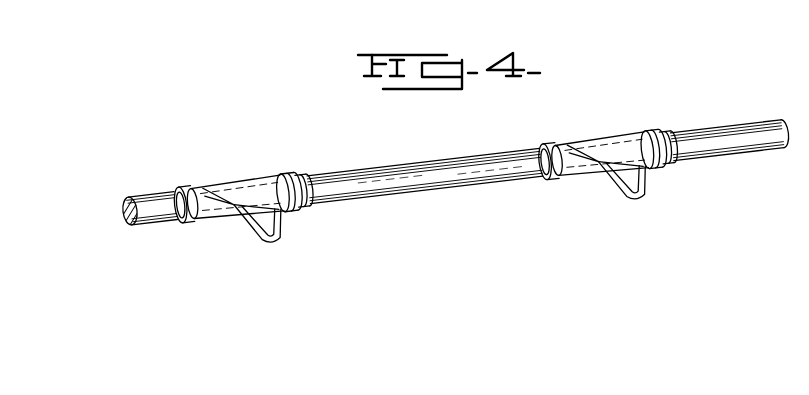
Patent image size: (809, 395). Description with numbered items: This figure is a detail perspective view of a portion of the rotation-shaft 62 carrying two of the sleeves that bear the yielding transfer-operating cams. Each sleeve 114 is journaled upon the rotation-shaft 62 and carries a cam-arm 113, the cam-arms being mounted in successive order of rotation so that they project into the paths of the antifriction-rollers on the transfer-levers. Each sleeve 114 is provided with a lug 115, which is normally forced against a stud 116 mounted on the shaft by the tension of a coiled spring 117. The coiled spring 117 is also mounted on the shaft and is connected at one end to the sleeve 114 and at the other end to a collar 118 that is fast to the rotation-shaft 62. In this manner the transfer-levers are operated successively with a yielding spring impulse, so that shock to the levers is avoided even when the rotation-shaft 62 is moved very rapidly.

The rotation-shaft 62 is at (437, 183).
The cam-arm 113 is at (268, 219).
The sleeve 114 is at (612, 136).
The lug 115 is at (185, 218).
The stud 116 is at (186, 175).
The coiled spring 117 is at (278, 175).
The collar 118 is at (302, 177).